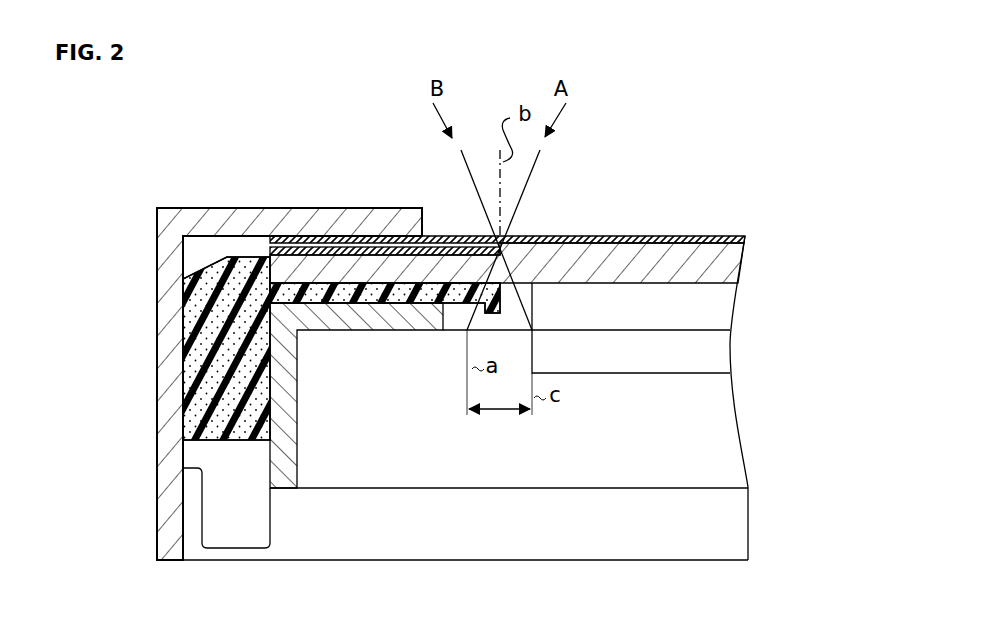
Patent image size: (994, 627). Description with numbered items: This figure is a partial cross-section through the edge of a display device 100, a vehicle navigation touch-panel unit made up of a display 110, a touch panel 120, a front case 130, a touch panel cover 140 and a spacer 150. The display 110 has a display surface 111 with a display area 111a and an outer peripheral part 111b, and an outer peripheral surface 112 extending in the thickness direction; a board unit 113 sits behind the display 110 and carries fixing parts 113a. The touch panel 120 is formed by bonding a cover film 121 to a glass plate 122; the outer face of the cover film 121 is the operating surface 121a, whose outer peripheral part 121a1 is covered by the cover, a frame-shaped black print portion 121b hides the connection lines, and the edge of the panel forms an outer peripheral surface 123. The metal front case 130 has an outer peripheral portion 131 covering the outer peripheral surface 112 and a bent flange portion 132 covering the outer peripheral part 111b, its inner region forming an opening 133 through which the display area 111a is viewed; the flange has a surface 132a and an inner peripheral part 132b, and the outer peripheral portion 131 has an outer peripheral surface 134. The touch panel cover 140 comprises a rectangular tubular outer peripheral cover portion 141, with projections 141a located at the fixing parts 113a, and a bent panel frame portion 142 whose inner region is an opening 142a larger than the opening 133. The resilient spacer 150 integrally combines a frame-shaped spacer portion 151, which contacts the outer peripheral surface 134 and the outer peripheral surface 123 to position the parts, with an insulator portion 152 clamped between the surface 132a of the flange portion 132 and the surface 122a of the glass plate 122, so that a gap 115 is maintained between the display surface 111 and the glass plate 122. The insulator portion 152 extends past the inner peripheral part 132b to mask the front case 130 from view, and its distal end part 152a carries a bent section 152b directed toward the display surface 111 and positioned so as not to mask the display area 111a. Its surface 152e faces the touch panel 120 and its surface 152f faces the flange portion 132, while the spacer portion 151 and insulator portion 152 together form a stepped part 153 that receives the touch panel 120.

The display device 100 is at (246, 186).
The display 110 is at (693, 416).
The display surface 111 is at (712, 306).
The display area 111a is at (712, 347).
The outer peripheral part of the display surface 111b is at (410, 325).
The outer peripheral surface 112 is at (280, 340).
The board unit 113 is at (693, 521).
The fixing parts 113a is at (195, 496).
The gap 115 is at (658, 303).
The touch panel 120 is at (812, 232).
The cover film 121 is at (715, 241).
The operating surface 121a is at (700, 233).
The outer peripheral part of the operating surface 121a1 is at (352, 250).
The black print portion 121b is at (301, 240).
The glass plate 122 is at (712, 266).
The surface of the glass plate 122a is at (392, 275).
The outer peripheral surface 123 is at (217, 263).
The front case 130 is at (92, 372).
The outer peripheral portion 131 is at (250, 368).
The flange portion 132 is at (290, 400).
The surface of the flange portion 132a is at (440, 310).
The inner peripheral part 132b is at (465, 243).
The opening 133 is at (525, 309).
The outer peripheral surface of the outer peripheral portion 134 is at (262, 441).
The touch panel cover 140 is at (92, 172).
The outer peripheral cover portion 141 is at (157, 238).
The projections 141a is at (183, 517).
The panel frame portion 142 is at (217, 208).
The opening 142a is at (425, 222).
The spacer 150 is at (92, 286).
The spacer portion 151 is at (210, 308).
The insulator portion 152 is at (205, 310).
The distal end part 152a is at (500, 295).
The bent section 152b is at (485, 316).
The surface of the insulator portion 152e is at (328, 252).
The surface of the insulator portion 152f is at (375, 305).
The stepped part 153 is at (272, 245).